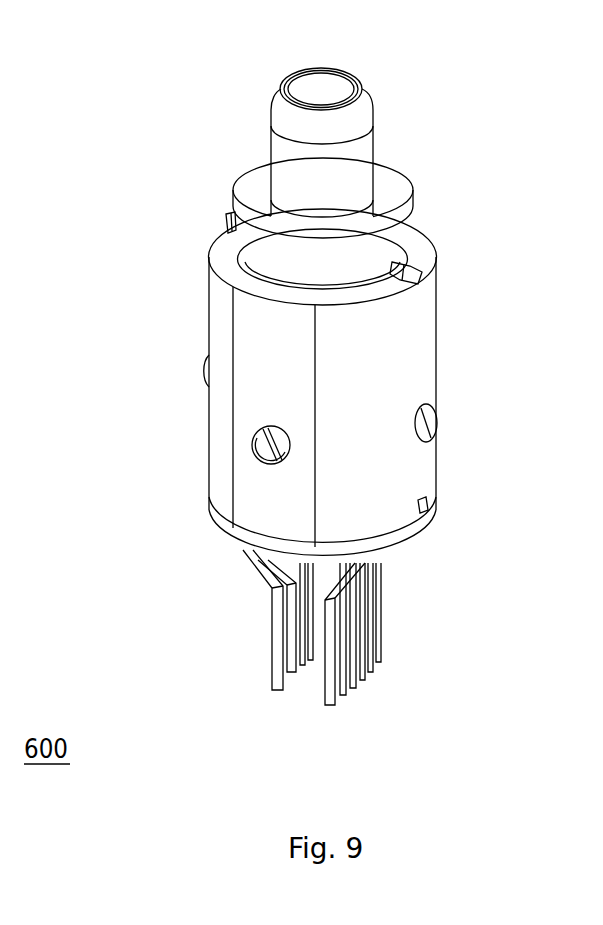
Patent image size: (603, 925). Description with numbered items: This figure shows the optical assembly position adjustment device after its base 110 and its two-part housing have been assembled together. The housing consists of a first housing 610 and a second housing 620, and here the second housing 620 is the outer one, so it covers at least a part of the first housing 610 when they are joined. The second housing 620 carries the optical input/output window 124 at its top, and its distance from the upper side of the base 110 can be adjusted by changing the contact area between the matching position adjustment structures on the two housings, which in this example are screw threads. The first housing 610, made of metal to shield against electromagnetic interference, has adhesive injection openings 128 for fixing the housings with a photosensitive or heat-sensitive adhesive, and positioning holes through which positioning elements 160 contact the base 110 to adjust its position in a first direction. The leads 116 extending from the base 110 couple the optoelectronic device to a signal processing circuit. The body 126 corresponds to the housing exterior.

The optical input/output window 124 is at (314, 88).
The second housing 620 is at (266, 118).
The adhesive injection opening 128 is at (218, 222).
The first housing 610 is at (206, 258).
The housing body 126 is at (418, 322).
The positioning element 160 is at (205, 372).
The base 110 is at (214, 522).
The lead 116 is at (355, 622).